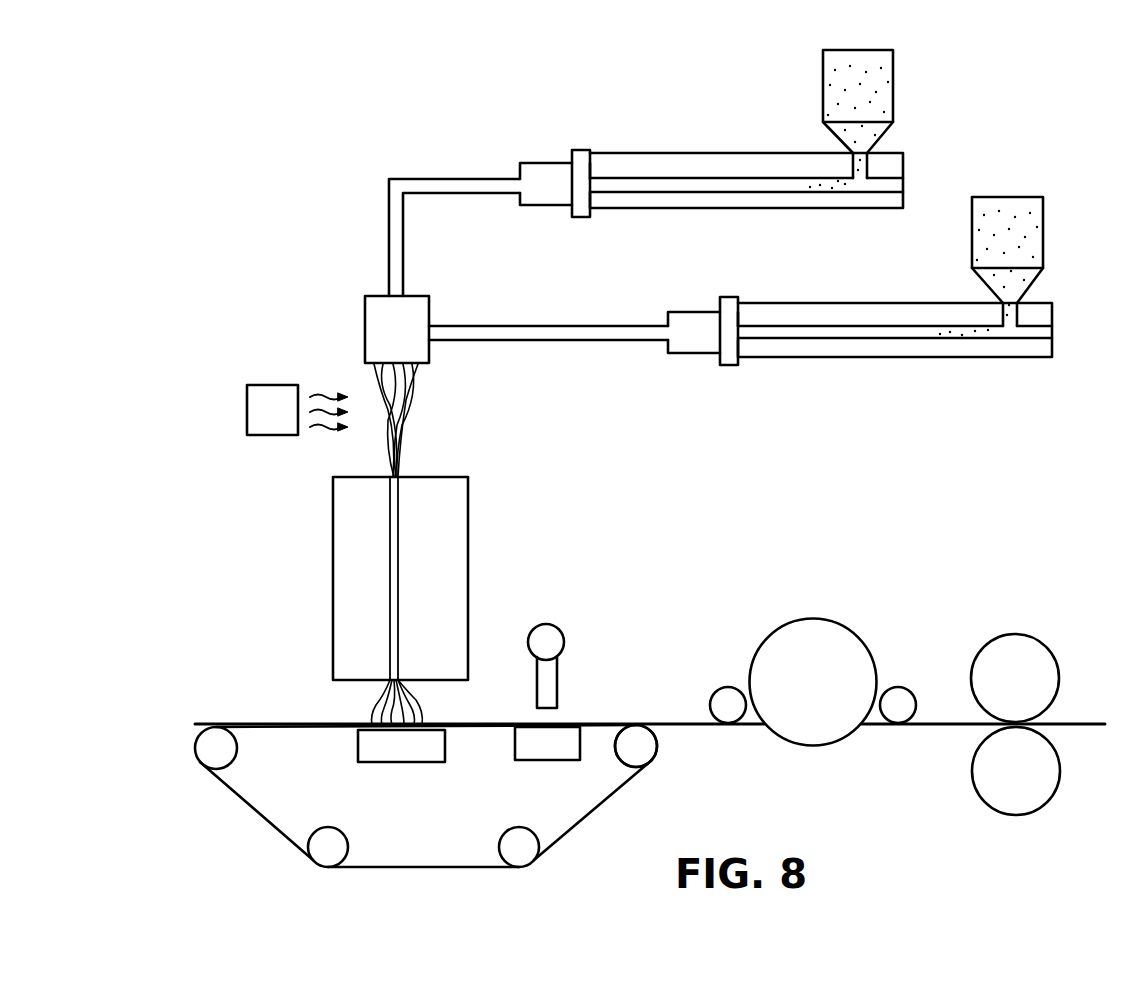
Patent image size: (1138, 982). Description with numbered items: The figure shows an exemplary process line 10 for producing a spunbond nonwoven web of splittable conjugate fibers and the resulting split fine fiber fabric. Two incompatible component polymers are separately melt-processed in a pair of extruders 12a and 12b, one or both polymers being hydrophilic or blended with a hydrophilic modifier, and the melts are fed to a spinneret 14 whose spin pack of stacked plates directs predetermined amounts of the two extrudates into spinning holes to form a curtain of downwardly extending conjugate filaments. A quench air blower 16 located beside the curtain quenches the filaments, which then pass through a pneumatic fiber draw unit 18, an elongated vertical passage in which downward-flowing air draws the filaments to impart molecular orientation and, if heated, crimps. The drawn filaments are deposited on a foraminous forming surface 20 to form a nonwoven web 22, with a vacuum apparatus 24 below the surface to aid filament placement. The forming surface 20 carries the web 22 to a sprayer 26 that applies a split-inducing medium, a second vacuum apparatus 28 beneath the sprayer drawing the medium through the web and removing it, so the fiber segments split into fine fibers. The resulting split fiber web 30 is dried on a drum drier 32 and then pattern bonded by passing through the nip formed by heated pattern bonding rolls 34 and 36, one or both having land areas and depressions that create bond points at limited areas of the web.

The process line 10 is at (256, 176).
The extruder 12a is at (767, 293).
The extruder 12b is at (620, 145).
The spinneret 14 is at (411, 341).
The quench air blower 16 is at (268, 392).
The pneumatic fiber draw unit 18 is at (455, 466).
The foraminous forming surface 20 is at (294, 723).
The nonwoven web 22 is at (480, 721).
The vacuum apparatus 24 is at (399, 764).
The sprayer 26 is at (550, 624).
The second vacuum box 28 is at (545, 762).
The split fiber web 30 is at (618, 721).
The drum drier 32 is at (845, 718).
The pattern bonding roll 34 is at (1048, 641).
The pattern bonding roll 36 is at (1047, 806).